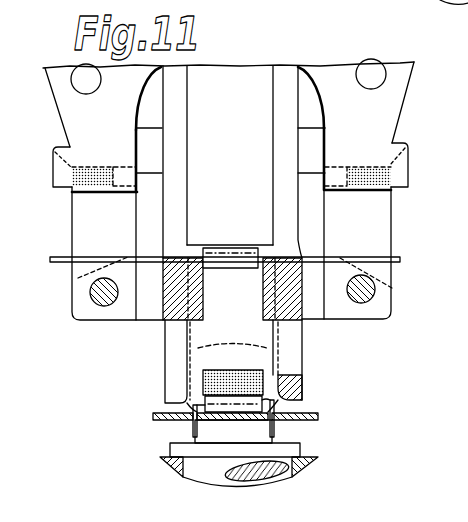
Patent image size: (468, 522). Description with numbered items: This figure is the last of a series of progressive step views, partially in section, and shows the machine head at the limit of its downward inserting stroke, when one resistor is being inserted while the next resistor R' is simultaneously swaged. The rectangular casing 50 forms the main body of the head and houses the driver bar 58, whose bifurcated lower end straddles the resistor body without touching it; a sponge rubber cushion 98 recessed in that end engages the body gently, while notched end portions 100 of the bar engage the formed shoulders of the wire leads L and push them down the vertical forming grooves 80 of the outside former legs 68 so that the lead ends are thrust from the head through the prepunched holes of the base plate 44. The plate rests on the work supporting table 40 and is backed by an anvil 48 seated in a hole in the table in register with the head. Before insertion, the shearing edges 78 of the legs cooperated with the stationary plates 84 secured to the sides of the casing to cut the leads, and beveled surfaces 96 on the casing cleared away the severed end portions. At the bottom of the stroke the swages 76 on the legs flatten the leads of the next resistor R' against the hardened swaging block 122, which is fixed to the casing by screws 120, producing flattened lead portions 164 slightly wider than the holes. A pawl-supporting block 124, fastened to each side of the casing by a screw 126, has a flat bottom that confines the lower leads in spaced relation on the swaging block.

The work supporting table 40 is at (305, 460).
The base plate 44 is at (320, 416).
The anvil 48 is at (300, 450).
The casing 50 is at (408, 88).
The driver bar 58 is at (247, 68).
The outside former legs 68 is at (272, 190).
The swages 76 is at (172, 262).
The shearing edges 78 is at (166, 403).
The forming grooves 80 is at (232, 344).
The stationary plates 84 is at (142, 130).
The beveled surfaces 96 is at (78, 278).
The sponge rubber cushion 98 is at (228, 371).
The notched end portions 100 is at (193, 408).
The screws 120 is at (96, 303).
The swaging block 122 is at (263, 305).
The pawl-supporting block 124 is at (57, 148).
The screw 126 is at (98, 165).
The flattened lead portions 164 is at (193, 430).
The wire leads L is at (62, 257).
The next resistor R' is at (230, 270).